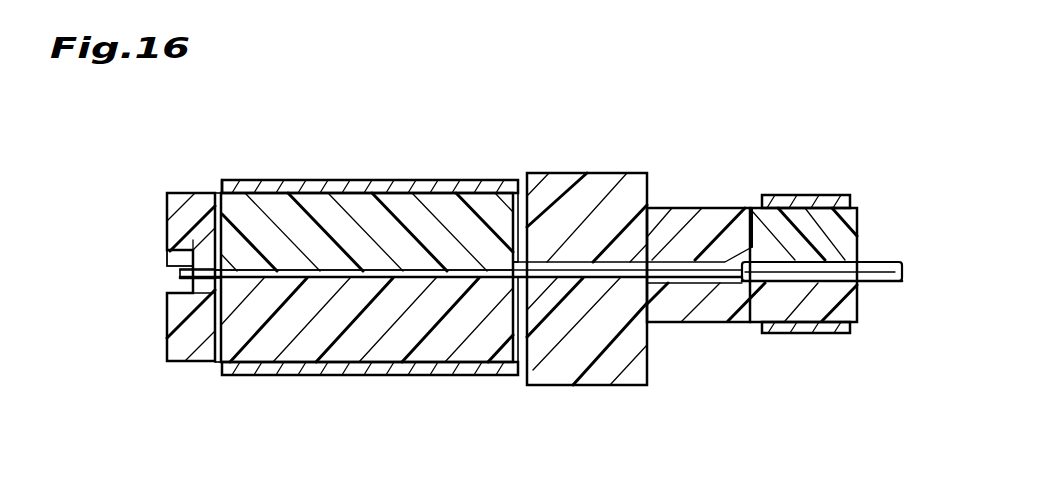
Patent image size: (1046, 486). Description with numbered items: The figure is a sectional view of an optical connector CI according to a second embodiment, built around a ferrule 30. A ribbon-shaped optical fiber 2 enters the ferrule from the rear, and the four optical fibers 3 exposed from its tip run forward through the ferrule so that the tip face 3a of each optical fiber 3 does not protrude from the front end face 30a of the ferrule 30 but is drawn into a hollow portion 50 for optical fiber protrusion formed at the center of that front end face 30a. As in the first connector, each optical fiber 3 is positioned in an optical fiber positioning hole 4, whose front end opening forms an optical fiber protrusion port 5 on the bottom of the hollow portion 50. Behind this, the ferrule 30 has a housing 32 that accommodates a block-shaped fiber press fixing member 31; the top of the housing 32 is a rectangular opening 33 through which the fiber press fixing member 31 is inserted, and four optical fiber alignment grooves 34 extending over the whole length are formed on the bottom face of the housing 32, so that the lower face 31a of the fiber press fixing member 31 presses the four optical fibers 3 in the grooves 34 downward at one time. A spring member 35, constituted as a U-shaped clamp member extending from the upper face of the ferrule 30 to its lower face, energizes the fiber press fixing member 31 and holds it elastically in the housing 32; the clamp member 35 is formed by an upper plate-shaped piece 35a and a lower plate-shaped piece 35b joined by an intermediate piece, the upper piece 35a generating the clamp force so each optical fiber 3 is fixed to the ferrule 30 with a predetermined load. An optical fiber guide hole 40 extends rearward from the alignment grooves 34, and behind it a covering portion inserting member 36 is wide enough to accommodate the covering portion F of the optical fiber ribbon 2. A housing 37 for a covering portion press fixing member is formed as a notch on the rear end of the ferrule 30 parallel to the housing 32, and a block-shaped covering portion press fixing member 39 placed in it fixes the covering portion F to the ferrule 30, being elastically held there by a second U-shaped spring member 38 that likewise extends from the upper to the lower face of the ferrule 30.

The optical fiber ribbon 2 is at (882, 254).
The optical fiber 3 is at (353, 279).
The tip face of the optical fiber 3a is at (180, 273).
The optical fiber positioning hole 4 is at (213, 296).
The optical fiber protrusion port 5 is at (193, 250).
The ferrule 30 is at (700, 200).
The front end face of the ferrule 30a is at (167, 340).
The fiber press fixing member 31 is at (418, 213).
The lower face of the fiber press fixing member 31a is at (330, 272).
The housing for the fiber press fixing member 32 is at (220, 240).
The rectangular opening 33 is at (234, 181).
The optical fiber alignment groove 34 is at (460, 279).
The spring member (clamp member) 35 is at (507, 176).
The upper plate-shaped piece 35a is at (477, 179).
The lower plate-shaped piece 35b is at (410, 375).
The covering portion inserting member 36 is at (780, 287).
The housing for the covering portion press fixing member 37 is at (763, 230).
The spring member (clamp member) 38 is at (829, 190).
The covering portion press fixing member 39 is at (797, 207).
The optical fiber guide hole 40 is at (627, 281).
The hollow portion for optical fiber protrusion 50 is at (167, 248).
The covering portion F is at (883, 284).
The optical connector CI is at (644, 136).